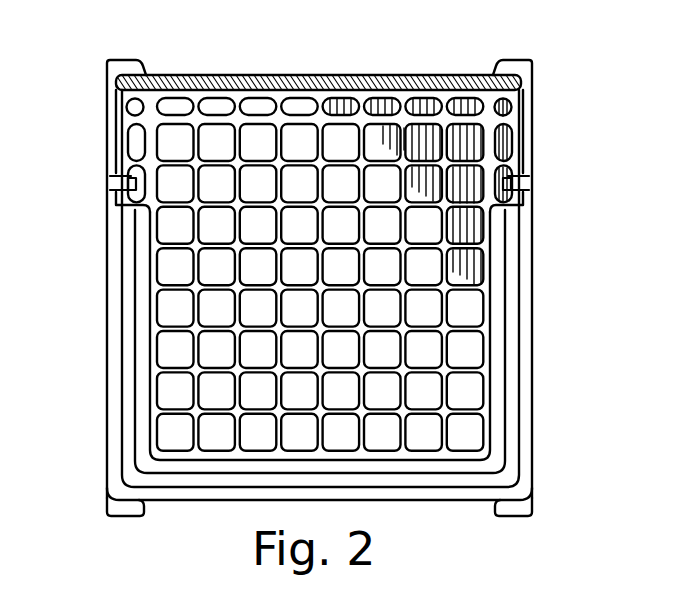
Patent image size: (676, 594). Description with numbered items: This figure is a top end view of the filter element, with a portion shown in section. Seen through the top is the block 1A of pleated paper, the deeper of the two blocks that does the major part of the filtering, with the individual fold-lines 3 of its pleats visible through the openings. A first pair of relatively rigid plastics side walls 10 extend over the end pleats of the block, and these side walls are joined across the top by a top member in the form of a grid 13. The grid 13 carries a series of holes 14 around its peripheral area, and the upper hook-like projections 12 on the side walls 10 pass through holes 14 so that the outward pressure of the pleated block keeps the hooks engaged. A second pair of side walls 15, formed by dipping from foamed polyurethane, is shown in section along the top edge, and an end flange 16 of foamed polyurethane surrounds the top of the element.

The block of pleated paper 1A is at (468, 146).
The fold-lines 3 is at (418, 158).
The side walls 10 is at (112, 120).
The upper hook-like projections 12 is at (132, 188).
The grid 13 is at (170, 263).
The holes 14 is at (297, 100).
The second pair of side walls 15 is at (338, 88).
The end flange 16 is at (115, 338).